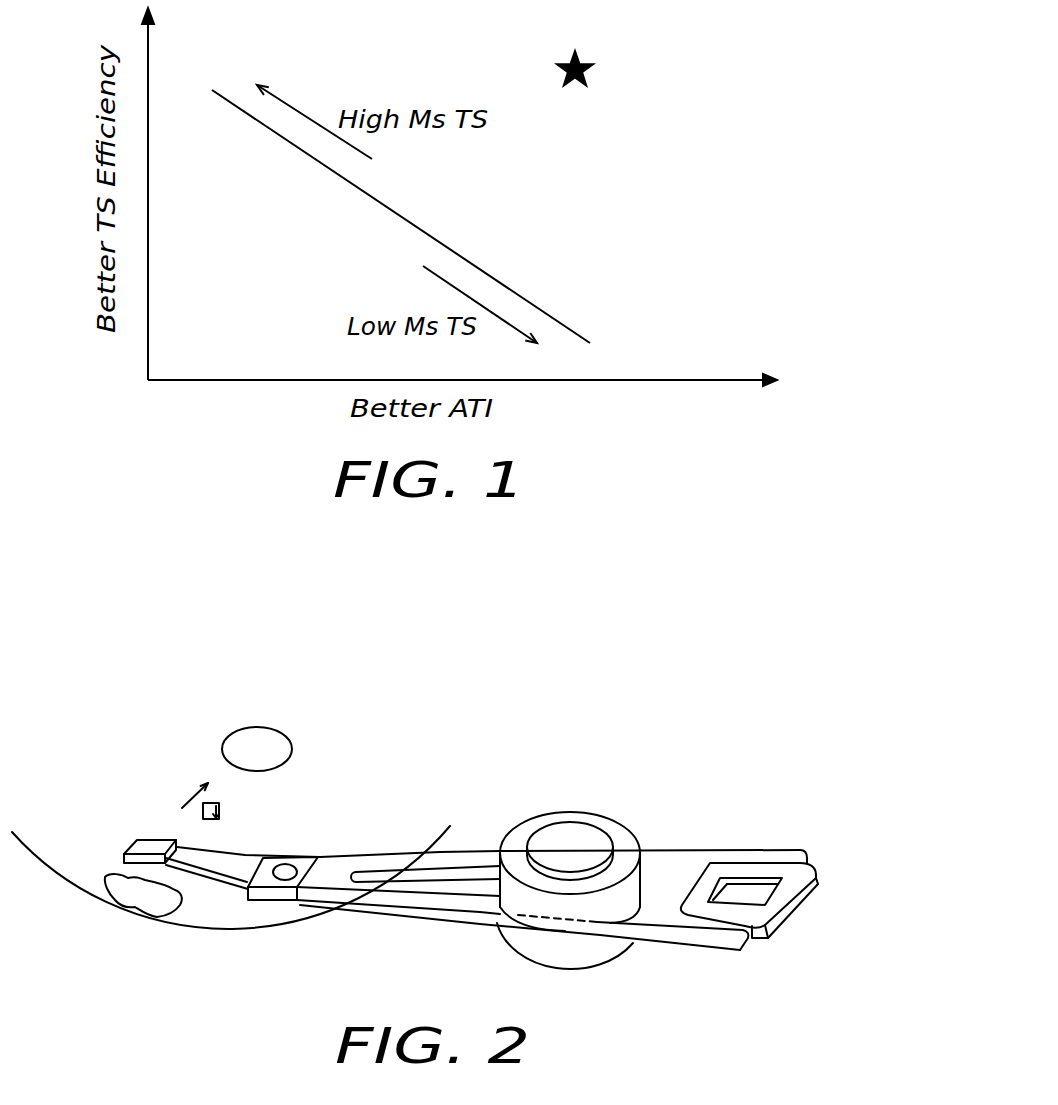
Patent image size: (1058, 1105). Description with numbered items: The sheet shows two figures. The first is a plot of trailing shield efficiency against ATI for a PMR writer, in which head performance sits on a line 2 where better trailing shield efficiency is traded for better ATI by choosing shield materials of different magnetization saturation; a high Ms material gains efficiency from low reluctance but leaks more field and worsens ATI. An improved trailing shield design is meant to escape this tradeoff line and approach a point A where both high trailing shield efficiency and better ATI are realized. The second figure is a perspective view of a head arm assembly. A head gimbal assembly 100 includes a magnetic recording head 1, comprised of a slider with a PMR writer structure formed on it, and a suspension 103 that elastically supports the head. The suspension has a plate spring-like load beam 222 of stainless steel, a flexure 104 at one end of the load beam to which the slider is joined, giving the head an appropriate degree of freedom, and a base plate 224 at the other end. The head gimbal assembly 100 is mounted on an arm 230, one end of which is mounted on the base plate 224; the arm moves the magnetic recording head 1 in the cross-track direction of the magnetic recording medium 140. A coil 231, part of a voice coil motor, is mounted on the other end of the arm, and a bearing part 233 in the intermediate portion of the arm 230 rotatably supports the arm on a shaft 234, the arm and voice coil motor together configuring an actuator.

In FIG. 1, the line 2 is at (358, 218).
In FIG. 1, the point A is at (589, 56).
In FIG. 2, the head gimbal assembly 100 is at (436, 845).
In FIG. 2, the suspension 103 is at (430, 812).
In FIG. 2, the flexure 104 is at (128, 855).
In FIG. 2, the magnetic recording head 1 is at (146, 845).
In FIG. 2, the magnetic recording medium 140 is at (122, 913).
In FIG. 2, the load beam 222 is at (245, 863).
In FIG. 2, the base plate 224 is at (318, 854).
In FIG. 2, the arm 230 is at (388, 905).
In FIG. 2, the coil 231 is at (790, 913).
In FIG. 2, the bearing part 233 is at (522, 832).
In FIG. 2, the shaft 234 is at (572, 833).